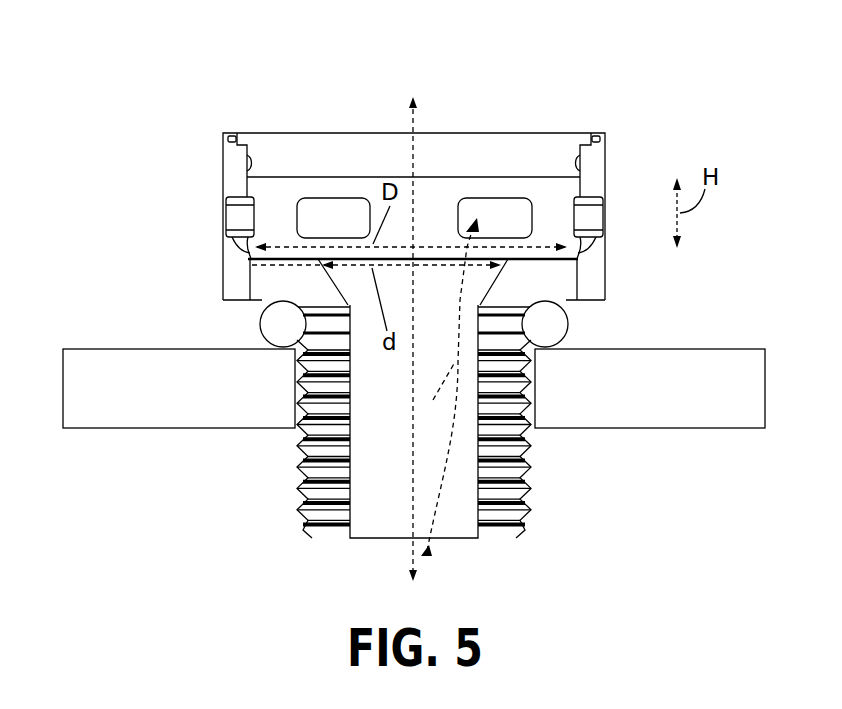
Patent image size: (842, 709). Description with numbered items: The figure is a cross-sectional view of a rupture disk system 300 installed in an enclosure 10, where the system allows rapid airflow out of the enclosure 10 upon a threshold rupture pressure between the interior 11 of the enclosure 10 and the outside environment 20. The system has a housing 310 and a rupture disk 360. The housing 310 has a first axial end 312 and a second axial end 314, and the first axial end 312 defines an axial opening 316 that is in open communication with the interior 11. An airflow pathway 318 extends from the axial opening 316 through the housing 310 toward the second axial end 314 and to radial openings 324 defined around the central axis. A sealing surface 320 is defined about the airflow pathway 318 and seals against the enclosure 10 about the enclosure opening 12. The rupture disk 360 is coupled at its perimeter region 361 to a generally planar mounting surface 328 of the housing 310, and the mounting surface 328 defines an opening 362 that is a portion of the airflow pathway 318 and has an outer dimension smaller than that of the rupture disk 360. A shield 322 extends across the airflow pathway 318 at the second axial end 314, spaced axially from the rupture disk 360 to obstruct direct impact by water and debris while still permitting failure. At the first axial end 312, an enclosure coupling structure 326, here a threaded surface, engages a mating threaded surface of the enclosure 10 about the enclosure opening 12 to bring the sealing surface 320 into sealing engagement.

The enclosure 10 is at (122, 328).
The interior 11 is at (170, 487).
The enclosure opening 12 is at (532, 391).
The outside environment 20 is at (103, 217).
The rupture disk system 300 is at (232, 63).
The housing 310 is at (607, 291).
The first axial end 312 is at (266, 533).
The second axial end 314 is at (183, 156).
The axial opening 316 is at (458, 525).
The airflow pathway 318 is at (449, 387).
The sealing surface 320 is at (272, 322).
The shield 322 is at (483, 153).
The radial openings 324 is at (593, 212).
The enclosure coupling structure 326 is at (320, 422).
The mounting surface 328 is at (280, 258).
The rupture disk 360 is at (436, 258).
The perimeter region 361 is at (583, 240).
The opening 362 is at (350, 238).